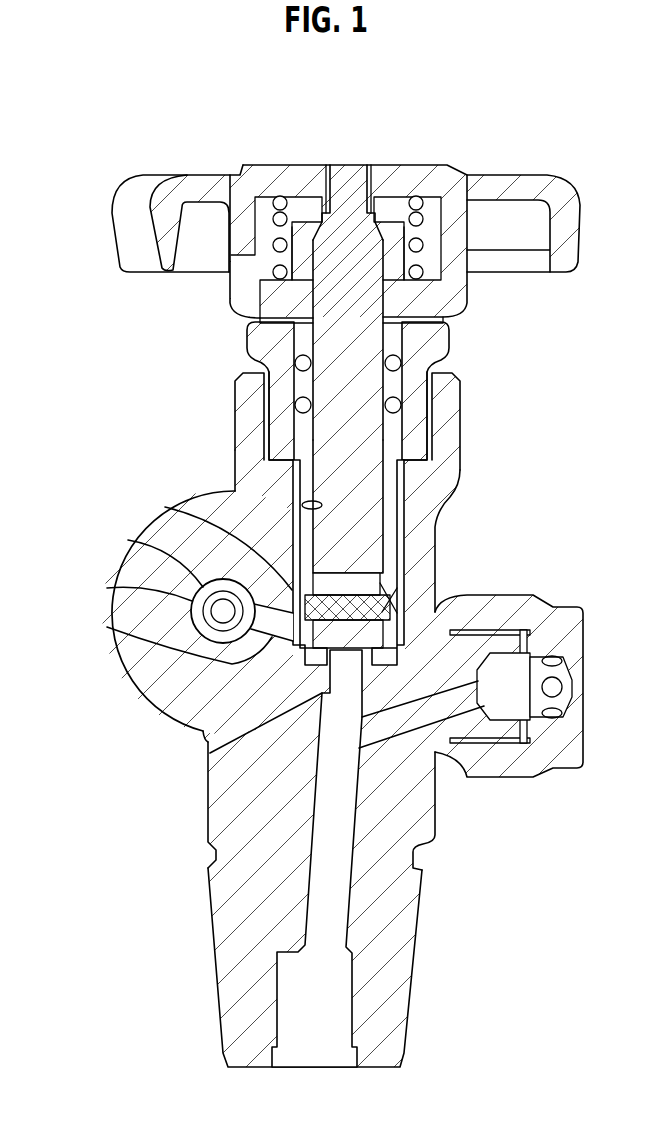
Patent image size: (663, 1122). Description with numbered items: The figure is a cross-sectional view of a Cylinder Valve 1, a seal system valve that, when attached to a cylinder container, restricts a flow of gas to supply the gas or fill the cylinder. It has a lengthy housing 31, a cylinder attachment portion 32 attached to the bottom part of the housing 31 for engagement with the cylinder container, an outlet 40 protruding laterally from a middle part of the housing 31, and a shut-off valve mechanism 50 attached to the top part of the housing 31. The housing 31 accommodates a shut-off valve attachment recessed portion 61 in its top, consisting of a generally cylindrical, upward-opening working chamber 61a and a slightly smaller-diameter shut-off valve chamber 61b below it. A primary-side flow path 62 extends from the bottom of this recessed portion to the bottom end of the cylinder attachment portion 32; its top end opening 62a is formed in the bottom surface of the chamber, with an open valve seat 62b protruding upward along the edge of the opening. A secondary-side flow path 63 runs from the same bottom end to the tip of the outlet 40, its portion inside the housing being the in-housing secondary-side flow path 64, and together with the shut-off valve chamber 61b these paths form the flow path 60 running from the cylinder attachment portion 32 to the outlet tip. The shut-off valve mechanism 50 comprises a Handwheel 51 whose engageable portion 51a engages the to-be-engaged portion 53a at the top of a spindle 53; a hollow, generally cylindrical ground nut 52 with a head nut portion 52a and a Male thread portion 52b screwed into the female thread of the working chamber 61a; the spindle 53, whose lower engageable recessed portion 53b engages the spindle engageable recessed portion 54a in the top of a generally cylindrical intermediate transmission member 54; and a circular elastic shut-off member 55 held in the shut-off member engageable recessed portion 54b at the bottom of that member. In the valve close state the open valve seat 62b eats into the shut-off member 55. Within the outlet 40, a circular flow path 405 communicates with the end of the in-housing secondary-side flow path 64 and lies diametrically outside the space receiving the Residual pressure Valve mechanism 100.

The Cylinder Valve 1 is at (60, 178).
The housing 31 is at (436, 833).
The cylinder attachment portion 32 is at (395, 990).
The outlet 40 is at (192, 489).
The shut-off valve mechanism 50 is at (188, 330).
The Handwheel 51 is at (372, 217).
The engageable portion 51a is at (307, 240).
The ground nut 52 is at (410, 391).
The head nut portion 52a is at (448, 345).
The Male thread portion 52b is at (415, 410).
The spindle 53 is at (424, 369).
The to-be-engaged portion 53a is at (355, 297).
The engageable recessed portion 53b is at (367, 550).
The intermediate transmission member 54 is at (299, 552).
The spindle engageable recessed portion 54a is at (195, 489).
The shut-off member engageable recessed portion 54b is at (165, 507).
The shut-off member 55 is at (395, 578).
The flow path 60 is at (322, 858).
The shut-off valve attachment recessed portion 61 is at (409, 575).
The working chamber 61a is at (437, 432).
The shut-off valve chamber 61b is at (445, 612).
The primary-side flow path 62 is at (335, 820).
The top end opening 62a is at (210, 753).
The open valve seat 62b is at (203, 736).
The secondary-side flow path 63 is at (151, 621).
The in-housing secondary-side flow path 64 is at (107, 627).
The Residual pressure Valve mechanism 100 is at (128, 540).
The circular flow path 405 is at (107, 588).